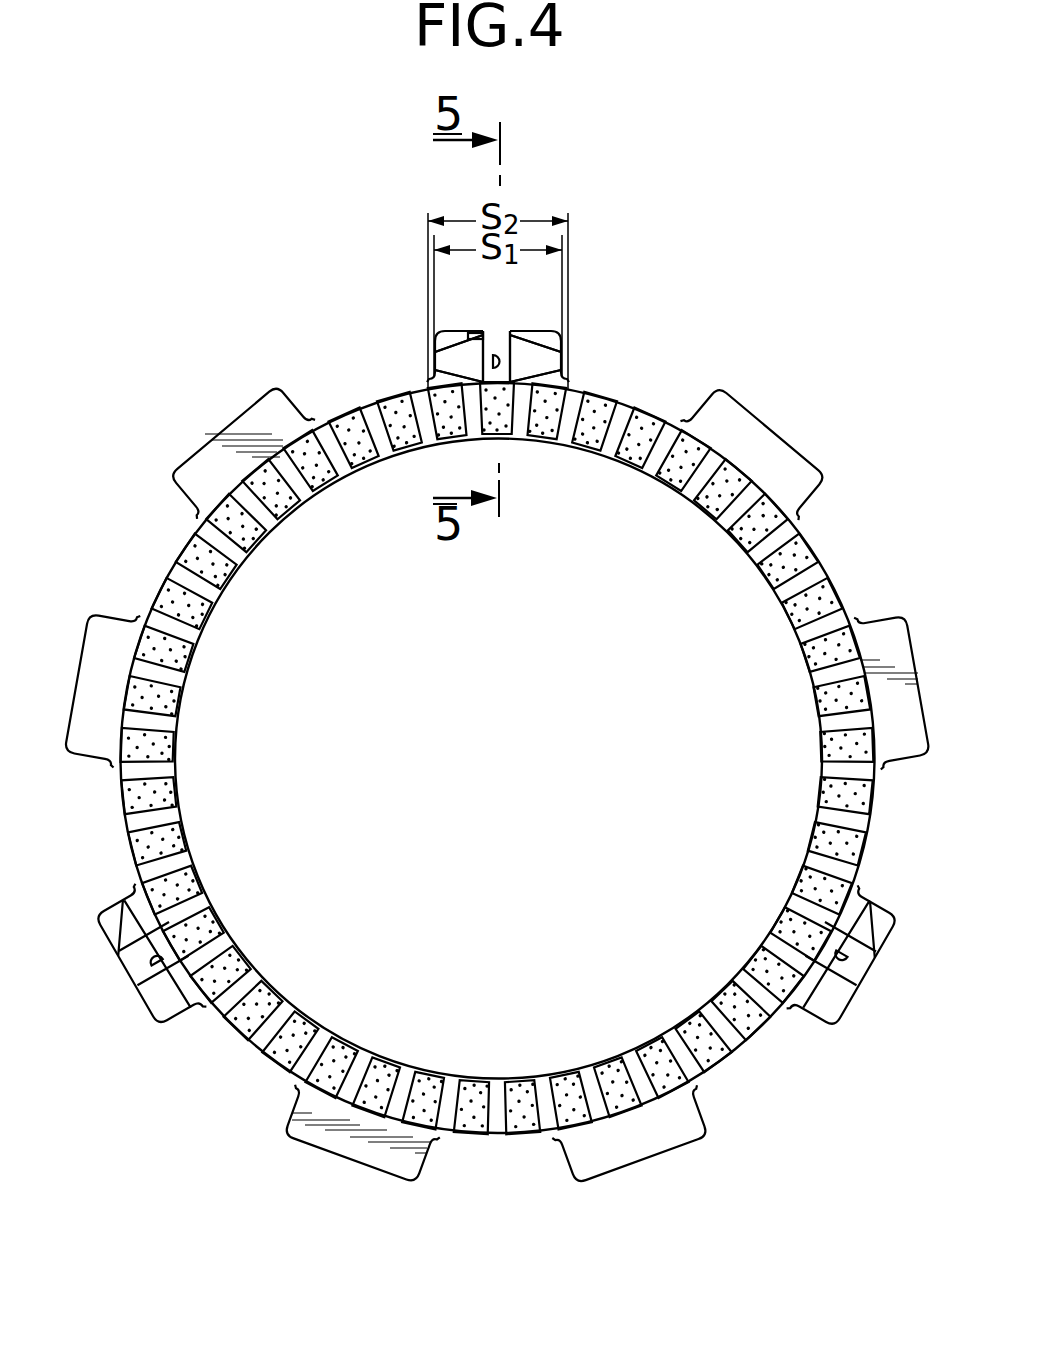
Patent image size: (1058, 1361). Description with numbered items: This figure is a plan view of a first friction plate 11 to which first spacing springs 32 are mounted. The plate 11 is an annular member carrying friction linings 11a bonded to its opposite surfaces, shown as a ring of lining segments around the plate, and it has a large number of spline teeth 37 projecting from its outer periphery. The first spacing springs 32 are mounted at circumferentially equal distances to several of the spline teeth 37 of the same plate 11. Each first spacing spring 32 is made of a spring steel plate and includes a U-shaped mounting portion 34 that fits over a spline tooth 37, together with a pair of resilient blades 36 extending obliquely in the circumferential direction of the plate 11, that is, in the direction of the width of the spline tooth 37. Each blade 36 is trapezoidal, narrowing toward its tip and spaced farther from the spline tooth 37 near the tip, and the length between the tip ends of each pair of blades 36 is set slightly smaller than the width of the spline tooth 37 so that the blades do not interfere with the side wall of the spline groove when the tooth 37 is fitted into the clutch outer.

The first friction plate 11 is at (805, 552).
The friction linings 11a is at (208, 610).
The first spacing spring 32 is at (469, 330).
The U-shaped mounting portion 34 is at (498, 345).
The resilient blades 36 is at (445, 363).
The spline teeth 37 is at (550, 336).